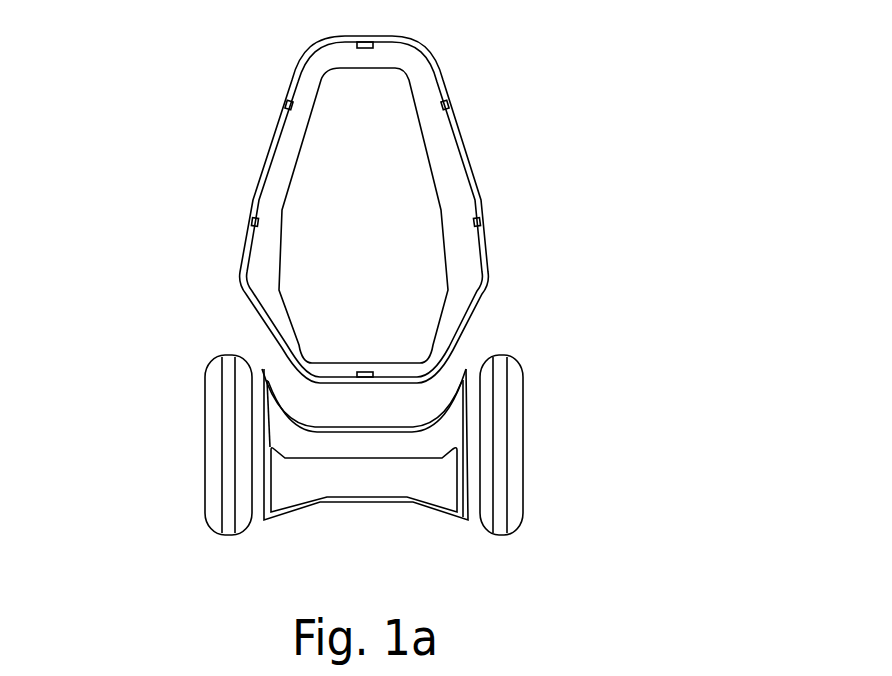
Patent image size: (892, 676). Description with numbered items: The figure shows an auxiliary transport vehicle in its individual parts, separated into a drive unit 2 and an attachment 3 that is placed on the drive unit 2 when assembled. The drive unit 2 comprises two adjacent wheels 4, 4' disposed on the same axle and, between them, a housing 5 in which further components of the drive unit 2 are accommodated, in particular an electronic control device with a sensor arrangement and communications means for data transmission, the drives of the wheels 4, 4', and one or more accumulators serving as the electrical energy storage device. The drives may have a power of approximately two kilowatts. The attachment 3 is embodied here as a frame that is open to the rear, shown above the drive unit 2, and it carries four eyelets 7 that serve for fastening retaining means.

The drive unit 2 is at (370, 321).
The attachment 3 is at (485, 241).
The wheel 4 is at (546, 445).
The wheel 4' is at (181, 445).
The housing 5 is at (367, 503).
The eyelets 7 is at (288, 105).